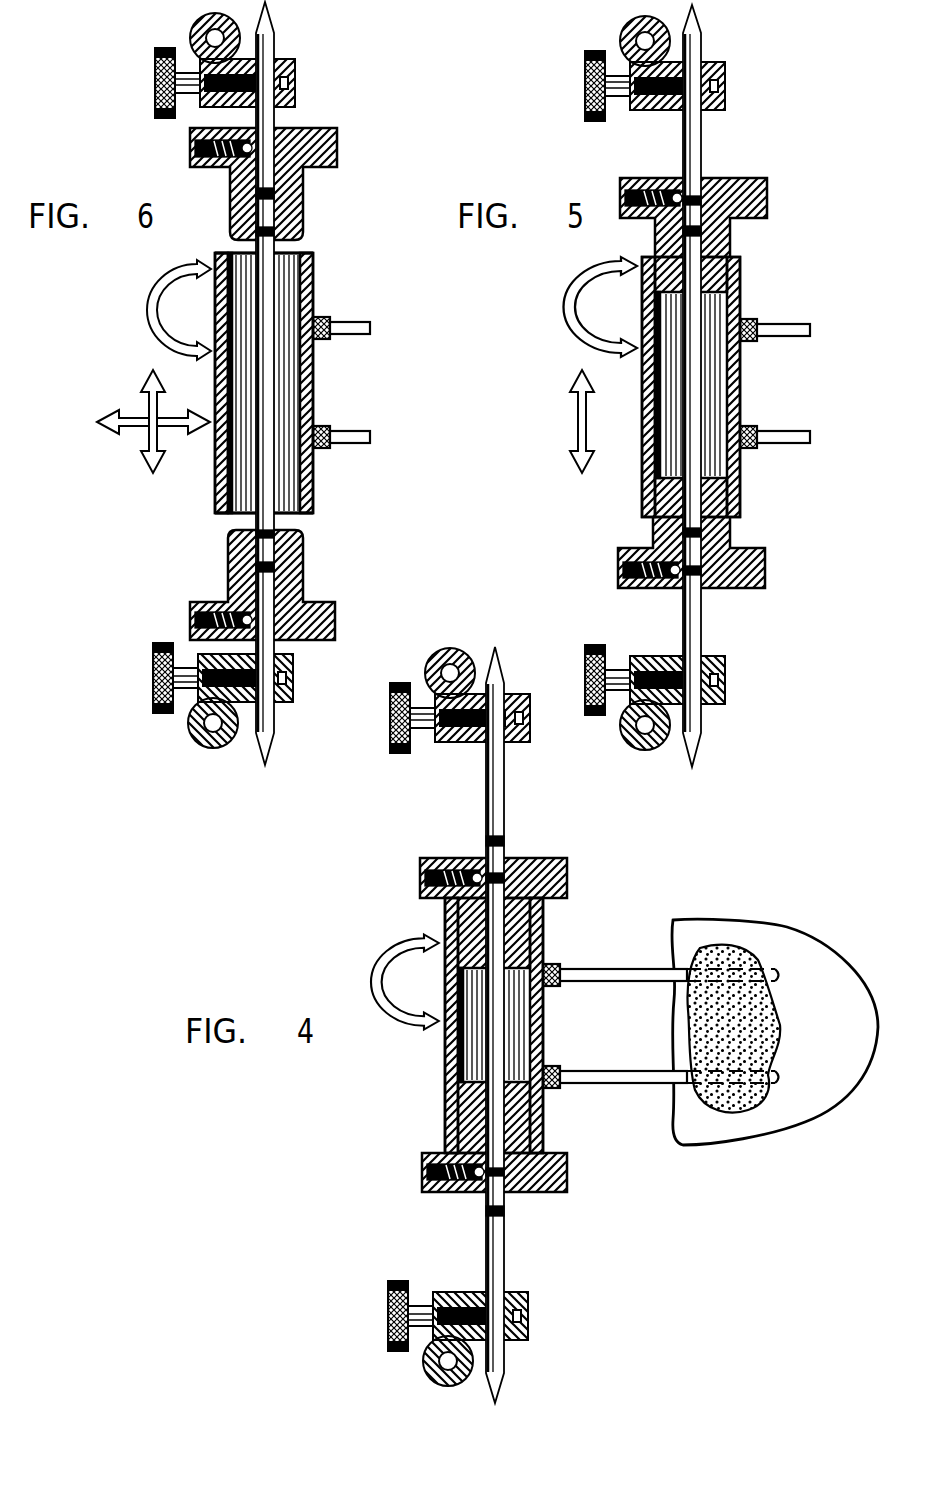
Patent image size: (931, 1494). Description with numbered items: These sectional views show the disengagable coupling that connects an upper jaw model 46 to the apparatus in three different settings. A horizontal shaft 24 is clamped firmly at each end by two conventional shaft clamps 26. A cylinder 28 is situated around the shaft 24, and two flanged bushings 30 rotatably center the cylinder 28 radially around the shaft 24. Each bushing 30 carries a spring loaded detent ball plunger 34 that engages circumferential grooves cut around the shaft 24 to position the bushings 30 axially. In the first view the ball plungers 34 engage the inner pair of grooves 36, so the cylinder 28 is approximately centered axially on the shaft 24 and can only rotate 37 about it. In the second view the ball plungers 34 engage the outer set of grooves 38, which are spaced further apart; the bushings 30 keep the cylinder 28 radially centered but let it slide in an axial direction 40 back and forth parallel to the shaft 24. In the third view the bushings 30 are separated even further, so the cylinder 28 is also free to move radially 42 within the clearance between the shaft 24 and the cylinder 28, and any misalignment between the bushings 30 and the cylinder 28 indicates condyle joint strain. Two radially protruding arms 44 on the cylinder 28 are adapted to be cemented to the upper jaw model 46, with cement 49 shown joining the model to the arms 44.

In FIG. 4, the shaft 24 is at (490, 1052).
In FIG. 6, the shaft clamp 26 is at (153, 678).
In FIG. 4, the shaft clamp 26 is at (390, 712).
In FIG. 6, the cylinder 28 is at (313, 284).
In FIG. 5, the cylinder 28 is at (691, 387).
In FIG. 4, the cylinder 28 is at (445, 1113).
In FIG. 6, the flanged bushing 30 is at (337, 142).
In FIG. 5, the flanged bushing 30 is at (767, 198).
In FIG. 4, the flanged bushing 30 is at (567, 868).
In FIG. 6, the spring loaded detent ball plunger 34 is at (190, 148).
In FIG. 5, the spring loaded detent ball plunger 34 is at (622, 570).
In FIG. 4, the spring loaded detent ball plunger 34 is at (422, 878).
In FIG. 6, the inner circumferential groove 36 is at (274, 232).
In FIG. 4, the inner circumferential groove 36 is at (504, 877).
In FIG. 6, the outer groove 38 is at (274, 193).
In FIG. 4, the outer groove 38 is at (504, 841).
In FIG. 6, the rotation 37 is at (178, 272).
In FIG. 5, the rotation 37 is at (585, 270).
In FIG. 4, the rotation 37 is at (380, 940).
In FIG. 6, the axial direction 40 is at (148, 407).
In FIG. 5, the axial direction 40 is at (578, 422).
In FIG. 6, the radial movement 42 is at (135, 432).
In FIG. 6, the radially protruding arm 44 is at (341, 382).
In FIG. 5, the radially protruding arm 44 is at (778, 432).
In FIG. 4, the radially protruding arm 44 is at (652, 1068).
In FIG. 4, the upper jaw model 46 is at (815, 1041).
In FIG. 4, the cement 49 is at (725, 950).